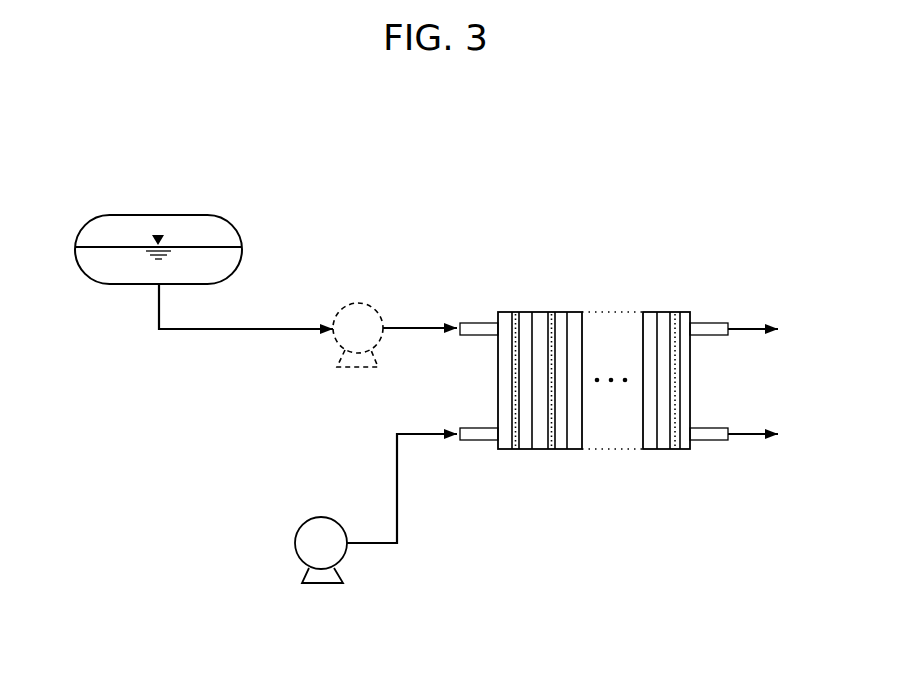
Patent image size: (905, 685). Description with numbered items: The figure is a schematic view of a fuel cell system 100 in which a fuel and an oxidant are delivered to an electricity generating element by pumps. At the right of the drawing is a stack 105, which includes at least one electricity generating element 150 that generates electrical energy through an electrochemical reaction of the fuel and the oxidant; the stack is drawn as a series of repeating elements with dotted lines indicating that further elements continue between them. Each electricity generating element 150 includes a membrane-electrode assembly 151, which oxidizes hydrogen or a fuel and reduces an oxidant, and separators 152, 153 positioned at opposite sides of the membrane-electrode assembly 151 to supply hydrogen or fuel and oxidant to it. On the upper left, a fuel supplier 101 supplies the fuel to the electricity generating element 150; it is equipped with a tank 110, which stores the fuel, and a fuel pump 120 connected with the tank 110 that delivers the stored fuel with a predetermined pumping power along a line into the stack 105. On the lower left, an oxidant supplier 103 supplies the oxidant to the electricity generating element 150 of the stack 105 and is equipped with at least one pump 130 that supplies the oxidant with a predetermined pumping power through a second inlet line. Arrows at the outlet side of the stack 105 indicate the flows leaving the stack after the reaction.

The fuel cell system 100 is at (619, 379).
The fuel supplier 101 is at (100, 212).
The oxidant supplier 103 is at (290, 537).
The stack 105 is at (650, 303).
The tank 110 is at (163, 215).
The fuel pump 120 is at (370, 305).
The pump 130 is at (315, 518).
The electricity generating element 150 is at (553, 441).
The membrane-electrode assembly 151 is at (550, 449).
The separator 152 is at (540, 449).
The separator 153 is at (585, 424).